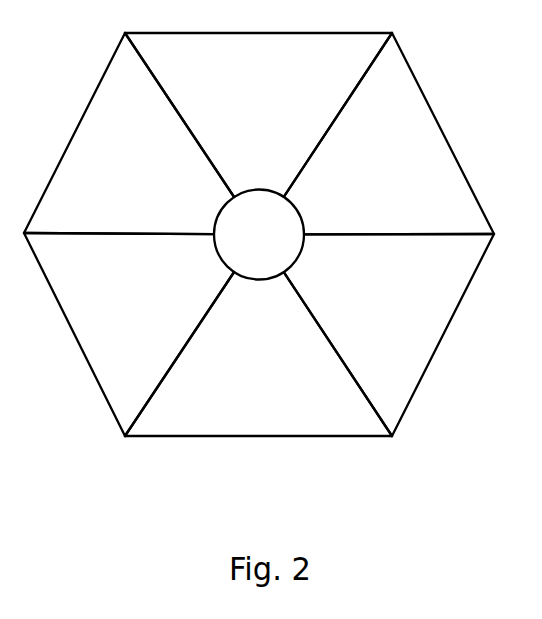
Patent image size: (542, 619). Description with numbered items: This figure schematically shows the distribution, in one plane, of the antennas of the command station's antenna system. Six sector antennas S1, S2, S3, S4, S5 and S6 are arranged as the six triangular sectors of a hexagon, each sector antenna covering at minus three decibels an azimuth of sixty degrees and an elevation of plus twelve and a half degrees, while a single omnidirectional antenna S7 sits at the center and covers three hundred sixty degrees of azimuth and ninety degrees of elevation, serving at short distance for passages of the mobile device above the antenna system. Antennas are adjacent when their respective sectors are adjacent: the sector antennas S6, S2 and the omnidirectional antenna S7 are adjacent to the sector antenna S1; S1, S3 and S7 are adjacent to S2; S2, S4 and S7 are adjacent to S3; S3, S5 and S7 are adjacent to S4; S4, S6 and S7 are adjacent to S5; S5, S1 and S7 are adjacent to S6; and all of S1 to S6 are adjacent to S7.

The sector antenna S1 is at (258, 115).
The sector antenna S2 is at (389, 133).
The sector antenna S3 is at (389, 335).
The sector antenna S4 is at (258, 354).
The sector antenna S5 is at (129, 334).
The sector antenna S6 is at (129, 133).
The omnidirectional antenna S7 is at (259, 235).